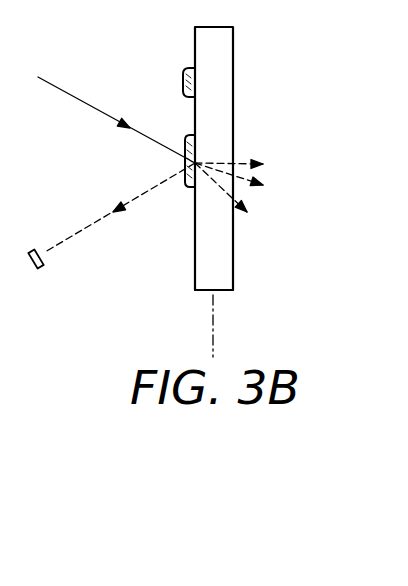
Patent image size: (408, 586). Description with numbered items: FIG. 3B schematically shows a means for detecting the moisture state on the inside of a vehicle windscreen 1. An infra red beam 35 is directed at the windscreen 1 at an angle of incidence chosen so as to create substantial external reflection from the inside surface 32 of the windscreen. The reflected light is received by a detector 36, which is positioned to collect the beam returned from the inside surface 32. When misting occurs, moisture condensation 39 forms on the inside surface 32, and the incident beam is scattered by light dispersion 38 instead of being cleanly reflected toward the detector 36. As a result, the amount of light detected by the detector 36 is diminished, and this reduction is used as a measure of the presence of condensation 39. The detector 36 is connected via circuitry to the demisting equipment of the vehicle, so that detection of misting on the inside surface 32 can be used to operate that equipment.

The display panel 1 is at (233, 268).
The inside surface of the windscreen 32 is at (194, 272).
The infra red beam 35 is at (66, 93).
The detector 36 is at (38, 273).
The light dispersion 38 is at (247, 186).
The moisture condensation 39 is at (184, 85).